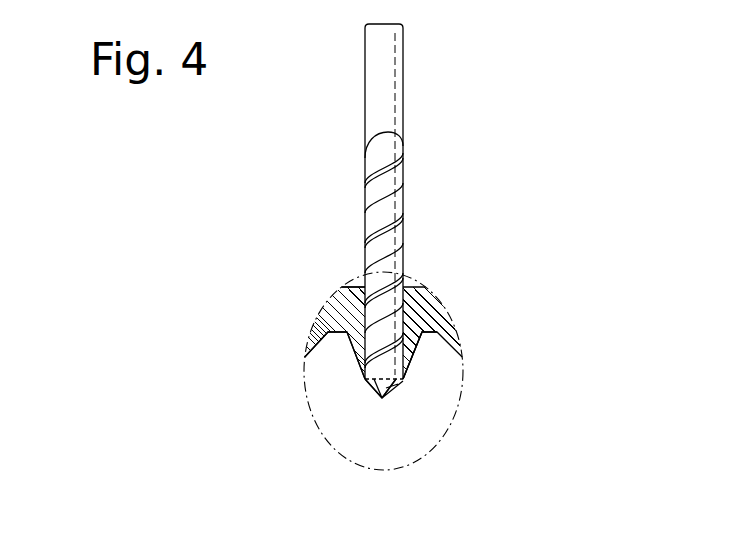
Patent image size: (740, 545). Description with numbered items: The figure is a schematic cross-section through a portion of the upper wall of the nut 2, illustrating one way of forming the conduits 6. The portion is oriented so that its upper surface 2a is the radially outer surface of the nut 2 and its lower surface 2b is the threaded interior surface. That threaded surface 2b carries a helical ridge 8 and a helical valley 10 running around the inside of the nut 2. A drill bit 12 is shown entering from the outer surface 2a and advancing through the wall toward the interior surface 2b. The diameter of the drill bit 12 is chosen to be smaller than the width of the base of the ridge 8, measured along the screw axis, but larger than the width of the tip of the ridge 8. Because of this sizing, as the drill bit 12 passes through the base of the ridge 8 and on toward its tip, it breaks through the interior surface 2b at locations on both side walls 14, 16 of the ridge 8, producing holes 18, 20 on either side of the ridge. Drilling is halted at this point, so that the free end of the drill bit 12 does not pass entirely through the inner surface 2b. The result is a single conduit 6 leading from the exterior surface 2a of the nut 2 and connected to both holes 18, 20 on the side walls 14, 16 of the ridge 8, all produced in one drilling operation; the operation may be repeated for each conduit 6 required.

The nut 2 is at (320, 305).
The upper surface 2a is at (364, 285).
The lower surface 2b is at (317, 343).
The conduit 6 is at (399, 289).
The helical ridge 8 is at (383, 400).
The helical valley 10 is at (443, 354).
The drill bit 12 is at (375, 116).
The side wall of the ridge 14 is at (365, 380).
The side wall of the ridge 16 is at (403, 380).
The hole 18 is at (365, 380).
The hole 20 is at (403, 380).